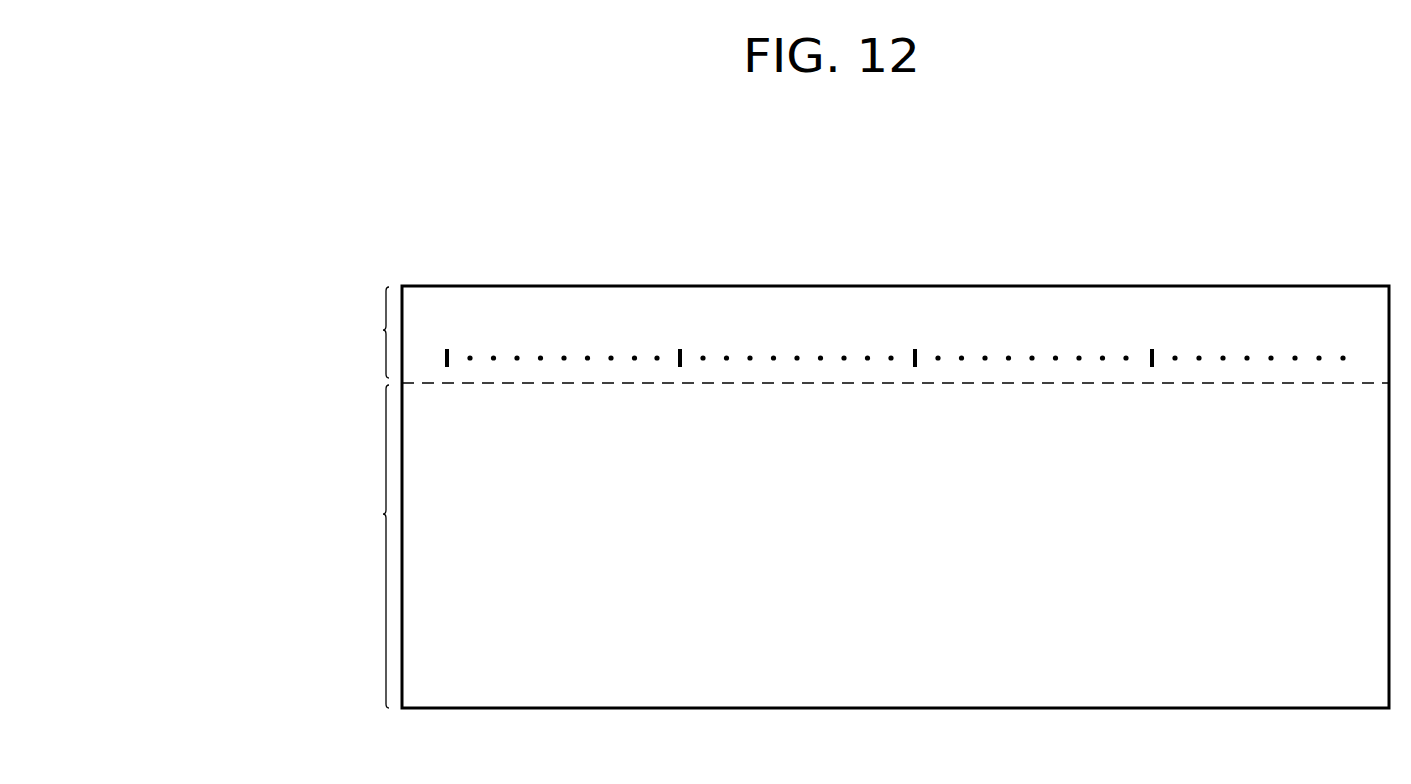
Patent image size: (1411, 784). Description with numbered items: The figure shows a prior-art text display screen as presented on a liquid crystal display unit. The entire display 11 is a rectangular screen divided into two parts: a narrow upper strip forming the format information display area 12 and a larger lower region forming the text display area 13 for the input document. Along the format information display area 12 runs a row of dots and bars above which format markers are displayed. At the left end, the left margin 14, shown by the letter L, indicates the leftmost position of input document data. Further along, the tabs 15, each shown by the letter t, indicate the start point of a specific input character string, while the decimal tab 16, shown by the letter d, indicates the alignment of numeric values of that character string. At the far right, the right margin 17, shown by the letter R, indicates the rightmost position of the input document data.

The display 11 is at (718, 688).
The format information display area 12 is at (726, 335).
The text display area 13 is at (228, 546).
The left margin 14 is at (540, 314).
The tabs 15 is at (727, 318).
The decimal tab 16 is at (1054, 318).
The right margin 17 is at (1312, 314).